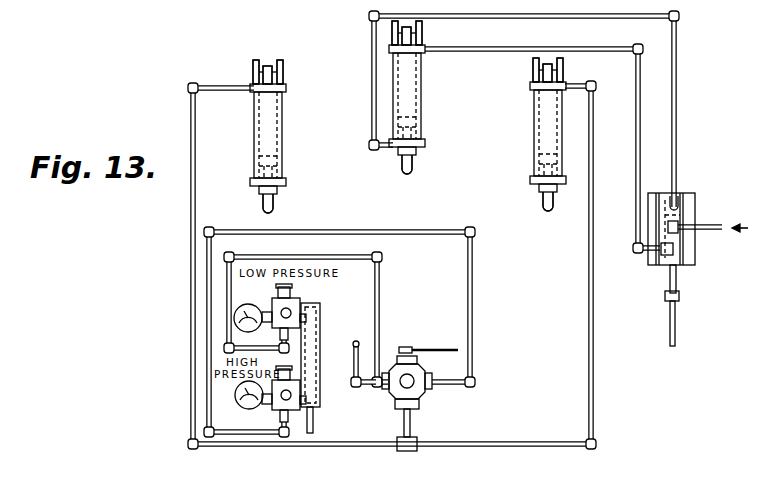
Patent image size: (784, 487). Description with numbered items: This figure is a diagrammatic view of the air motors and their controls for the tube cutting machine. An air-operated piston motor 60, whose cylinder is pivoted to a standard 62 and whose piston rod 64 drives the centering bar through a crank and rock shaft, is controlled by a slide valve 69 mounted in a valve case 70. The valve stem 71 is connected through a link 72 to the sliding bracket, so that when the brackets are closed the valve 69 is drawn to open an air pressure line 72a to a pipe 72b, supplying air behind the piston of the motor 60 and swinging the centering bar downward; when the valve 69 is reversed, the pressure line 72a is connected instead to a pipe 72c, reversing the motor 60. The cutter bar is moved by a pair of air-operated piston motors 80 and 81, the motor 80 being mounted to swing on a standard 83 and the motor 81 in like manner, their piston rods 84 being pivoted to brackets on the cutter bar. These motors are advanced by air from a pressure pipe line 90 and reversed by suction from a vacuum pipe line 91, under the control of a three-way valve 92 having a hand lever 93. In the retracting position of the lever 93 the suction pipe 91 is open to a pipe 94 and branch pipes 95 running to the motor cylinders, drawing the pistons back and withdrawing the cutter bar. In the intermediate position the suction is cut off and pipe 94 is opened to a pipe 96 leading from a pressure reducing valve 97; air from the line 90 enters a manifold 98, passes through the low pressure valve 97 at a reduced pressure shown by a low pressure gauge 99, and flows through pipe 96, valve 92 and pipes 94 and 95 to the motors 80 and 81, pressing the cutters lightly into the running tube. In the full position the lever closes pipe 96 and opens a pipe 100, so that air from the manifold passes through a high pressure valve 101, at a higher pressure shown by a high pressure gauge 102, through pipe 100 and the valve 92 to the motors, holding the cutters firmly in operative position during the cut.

The air-operated piston motor 60 is at (408, 98).
The standard 62 is at (421, 36).
The piston rod 64 is at (410, 166).
The slide valve 69 is at (676, 218).
The valve case 70 is at (690, 197).
The valve stem 71 is at (677, 277).
The link 72 is at (673, 320).
The air pressure line 72a is at (706, 229).
The pipe 72b is at (635, 140).
The pipe 72c is at (676, 70).
The air-operated piston motor 80 is at (543, 133).
The air-operated piston motor 81 is at (268, 137).
The standard 83 is at (283, 73).
The piston rods 84 is at (274, 208).
The pressure pipe line 90 is at (316, 421).
The vacuum pipe line 91 is at (355, 363).
The three-way valve 92 is at (423, 374).
The hand lever 93 is at (456, 352).
The pipe 94 is at (412, 420).
The branch pipes 95 is at (367, 444).
The pipe 96 is at (379, 301).
The pressure reducing valve 97 is at (291, 298).
The manifold 98 is at (313, 316).
The low pressure gauge 99 is at (268, 305).
The pipe 100 is at (472, 317).
The high pressure valve 101 is at (279, 406).
The high pressure gauge 102 is at (243, 405).